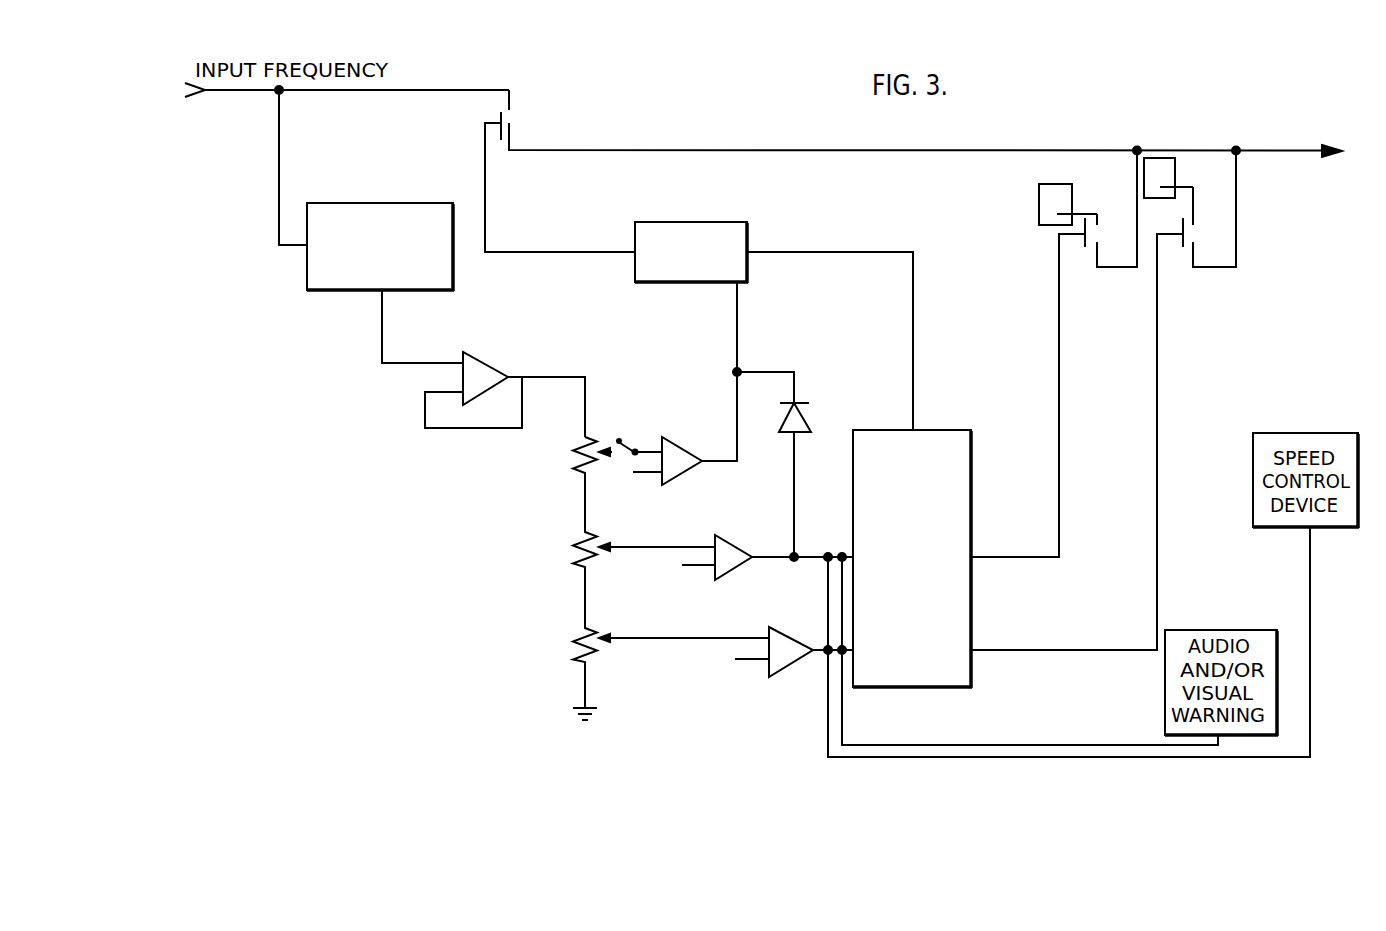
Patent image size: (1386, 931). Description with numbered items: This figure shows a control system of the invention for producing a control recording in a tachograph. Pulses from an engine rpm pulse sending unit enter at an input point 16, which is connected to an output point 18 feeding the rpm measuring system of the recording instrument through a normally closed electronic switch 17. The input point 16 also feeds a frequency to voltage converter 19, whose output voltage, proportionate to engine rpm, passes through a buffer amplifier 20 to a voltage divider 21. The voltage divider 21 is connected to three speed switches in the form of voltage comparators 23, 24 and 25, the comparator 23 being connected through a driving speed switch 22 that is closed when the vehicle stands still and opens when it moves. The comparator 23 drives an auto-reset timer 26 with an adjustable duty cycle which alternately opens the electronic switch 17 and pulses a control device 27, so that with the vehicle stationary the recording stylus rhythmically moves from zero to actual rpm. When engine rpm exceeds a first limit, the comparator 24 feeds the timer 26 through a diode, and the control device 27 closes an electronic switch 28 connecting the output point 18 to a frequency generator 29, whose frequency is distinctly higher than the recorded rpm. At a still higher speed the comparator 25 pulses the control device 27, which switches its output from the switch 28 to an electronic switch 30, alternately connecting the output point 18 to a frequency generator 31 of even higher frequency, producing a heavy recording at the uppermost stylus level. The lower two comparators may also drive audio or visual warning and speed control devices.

The input point 16 is at (190, 100).
The electronic switch 17 is at (517, 120).
The output point 18 is at (1316, 150).
The frequency to voltage converter 19 is at (353, 203).
The buffer amplifier 20 is at (463, 386).
The voltage divider 21 is at (583, 575).
The driving speed switch 22 is at (622, 440).
The voltage comparator 23 is at (690, 470).
The voltage comparator 24 is at (730, 550).
The voltage comparator 25 is at (783, 655).
The auto-reset timer 26 is at (730, 228).
The control device 27 is at (965, 452).
The electronic switch 28 is at (1095, 272).
The frequency generator 29 is at (1072, 192).
The electronic switch 30 is at (1190, 272).
The frequency generator 31 is at (1175, 172).